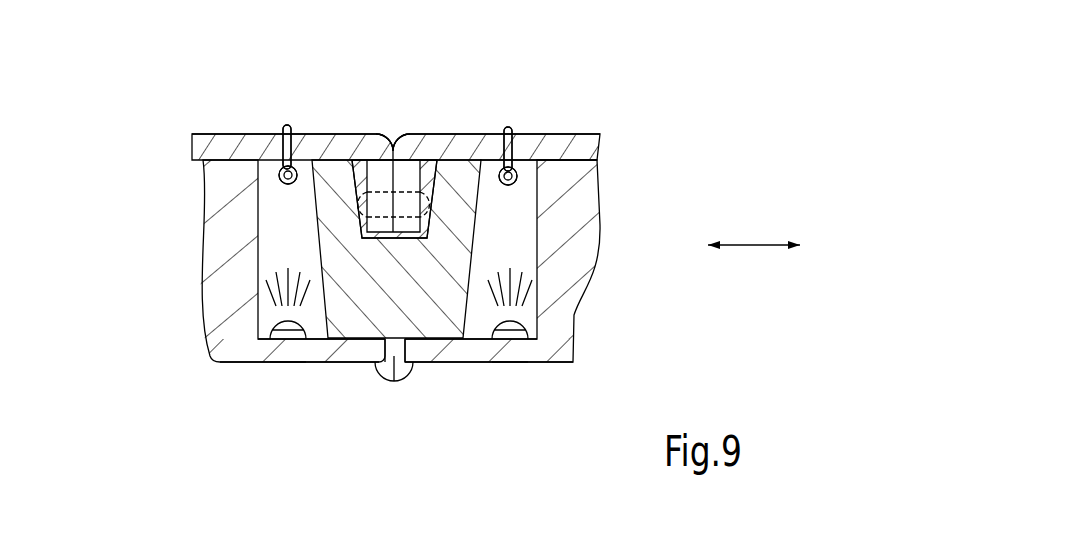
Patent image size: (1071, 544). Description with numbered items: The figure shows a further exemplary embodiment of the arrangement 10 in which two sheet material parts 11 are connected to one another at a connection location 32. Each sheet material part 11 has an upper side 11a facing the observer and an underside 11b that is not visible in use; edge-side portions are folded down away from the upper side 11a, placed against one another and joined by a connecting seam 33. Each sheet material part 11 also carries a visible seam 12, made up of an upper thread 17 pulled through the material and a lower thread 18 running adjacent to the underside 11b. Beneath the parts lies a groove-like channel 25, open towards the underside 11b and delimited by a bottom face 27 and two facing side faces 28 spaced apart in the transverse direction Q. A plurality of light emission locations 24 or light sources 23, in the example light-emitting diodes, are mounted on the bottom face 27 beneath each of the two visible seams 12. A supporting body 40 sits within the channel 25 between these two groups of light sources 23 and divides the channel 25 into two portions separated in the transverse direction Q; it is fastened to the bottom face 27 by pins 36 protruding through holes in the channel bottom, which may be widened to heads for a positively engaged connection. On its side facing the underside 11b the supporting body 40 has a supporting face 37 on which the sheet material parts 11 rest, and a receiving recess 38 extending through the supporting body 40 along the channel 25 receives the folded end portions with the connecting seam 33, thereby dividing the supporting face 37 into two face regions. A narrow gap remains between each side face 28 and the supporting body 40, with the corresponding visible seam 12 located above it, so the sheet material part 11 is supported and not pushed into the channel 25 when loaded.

The arrangement 10 is at (751, 83).
The sheet material part 11 is at (192, 146).
The upper side 11a is at (595, 119).
The underside 11b is at (600, 168).
The visible seam 12 is at (283, 121).
The upper thread 17 is at (289, 124).
The lower thread 18 is at (292, 186).
The light source 23 is at (285, 363).
The light emission location 24 is at (262, 322).
The channel 25 is at (527, 238).
The bottom face 27 is at (462, 326).
The side face 28 is at (268, 228).
The connection location 32 is at (394, 127).
The connecting seam 33 is at (376, 133).
The pin 36 is at (393, 378).
The supporting face 37 is at (344, 156).
The receiving recess 38 is at (426, 158).
The supporting body 40 is at (352, 323).
The transverse direction Q is at (752, 246).